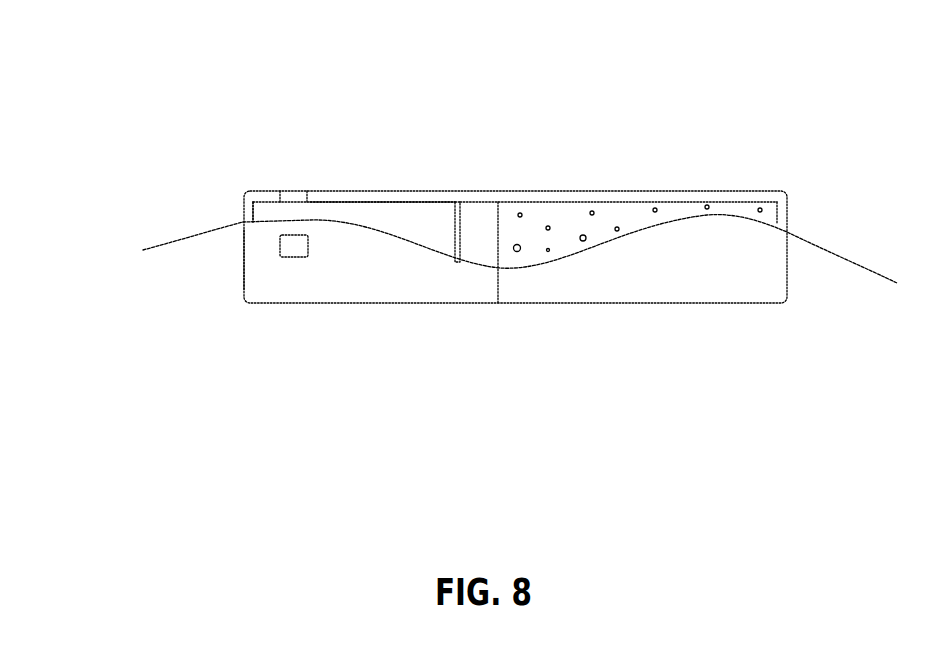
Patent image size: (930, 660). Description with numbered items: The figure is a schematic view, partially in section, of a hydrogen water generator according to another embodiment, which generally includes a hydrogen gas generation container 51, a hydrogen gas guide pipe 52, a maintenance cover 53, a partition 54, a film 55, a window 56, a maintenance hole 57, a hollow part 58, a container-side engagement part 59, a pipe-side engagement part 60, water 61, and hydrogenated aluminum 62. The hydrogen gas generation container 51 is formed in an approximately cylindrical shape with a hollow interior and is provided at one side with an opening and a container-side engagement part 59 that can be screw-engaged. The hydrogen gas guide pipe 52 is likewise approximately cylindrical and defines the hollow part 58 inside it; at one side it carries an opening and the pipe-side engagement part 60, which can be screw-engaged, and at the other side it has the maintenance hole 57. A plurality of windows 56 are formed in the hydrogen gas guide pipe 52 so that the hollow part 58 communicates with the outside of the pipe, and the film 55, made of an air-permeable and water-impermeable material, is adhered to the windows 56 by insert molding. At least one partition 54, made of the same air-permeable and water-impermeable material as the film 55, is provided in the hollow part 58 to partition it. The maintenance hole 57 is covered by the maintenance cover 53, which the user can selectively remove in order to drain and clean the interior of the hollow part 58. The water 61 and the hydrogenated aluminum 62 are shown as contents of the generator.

The hydrogen gas generation container 51 is at (705, 193).
The hydrogen gas guide pipe 52 is at (412, 198).
The maintenance cover 53 is at (243, 222).
The partition 54 is at (455, 233).
The film 55 is at (282, 78).
The window 56 is at (297, 393).
The maintenance hole 57 is at (245, 296).
The hollow part 58 is at (335, 215).
The container-side engagement part 59 is at (480, 280).
The pipe-side engagement part 60 is at (480, 280).
The water 61 is at (567, 247).
The hydrogenated aluminum 62 is at (655, 210).